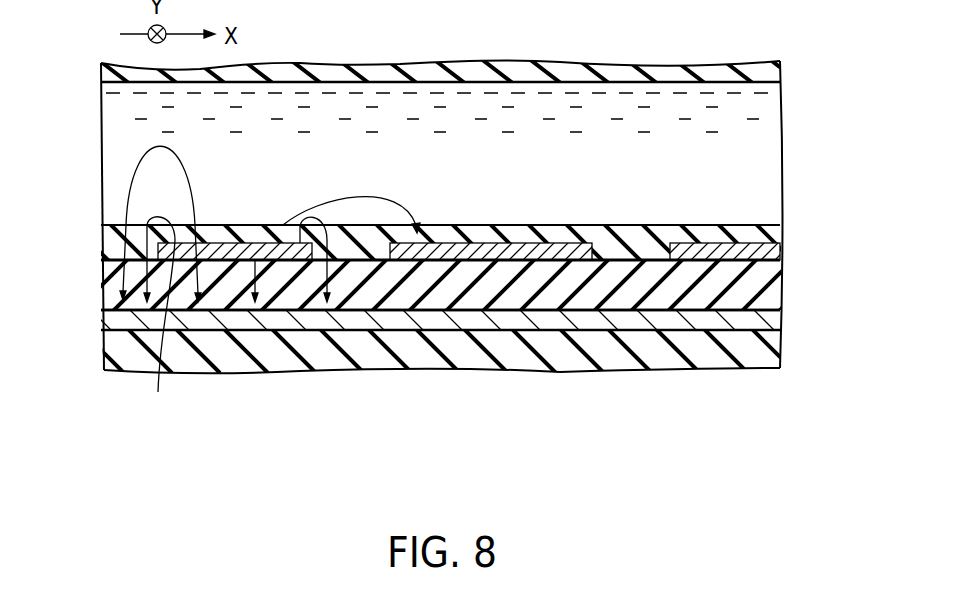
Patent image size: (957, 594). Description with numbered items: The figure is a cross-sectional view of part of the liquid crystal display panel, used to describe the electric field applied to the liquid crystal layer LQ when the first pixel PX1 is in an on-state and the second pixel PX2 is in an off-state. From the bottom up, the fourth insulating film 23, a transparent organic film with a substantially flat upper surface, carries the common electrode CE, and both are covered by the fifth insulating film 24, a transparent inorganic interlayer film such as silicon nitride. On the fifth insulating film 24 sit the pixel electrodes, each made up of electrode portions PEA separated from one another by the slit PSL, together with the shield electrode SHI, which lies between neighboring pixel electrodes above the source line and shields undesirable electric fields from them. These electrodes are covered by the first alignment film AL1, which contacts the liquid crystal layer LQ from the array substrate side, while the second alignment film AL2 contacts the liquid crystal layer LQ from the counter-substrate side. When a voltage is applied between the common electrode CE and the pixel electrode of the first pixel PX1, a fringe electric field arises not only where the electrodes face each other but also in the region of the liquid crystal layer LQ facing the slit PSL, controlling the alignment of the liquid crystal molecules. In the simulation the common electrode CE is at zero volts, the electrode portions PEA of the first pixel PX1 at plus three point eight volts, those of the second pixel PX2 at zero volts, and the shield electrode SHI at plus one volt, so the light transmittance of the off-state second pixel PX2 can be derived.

The second alignment film AL2 is at (103, 71).
The liquid crystal layer LQ is at (116, 124).
The first alignment film AL1 is at (103, 232).
The electrode portion PEA is at (223, 245).
The shield electrode SHI is at (488, 258).
The fifth insulating film 24 is at (773, 276).
The fourth insulating film 23 is at (770, 334).
The common electrode CE is at (415, 321).
The slit PSL is at (157, 318).
The first pixel PX1 is at (312, 384).
The second pixel PX2 is at (659, 380).